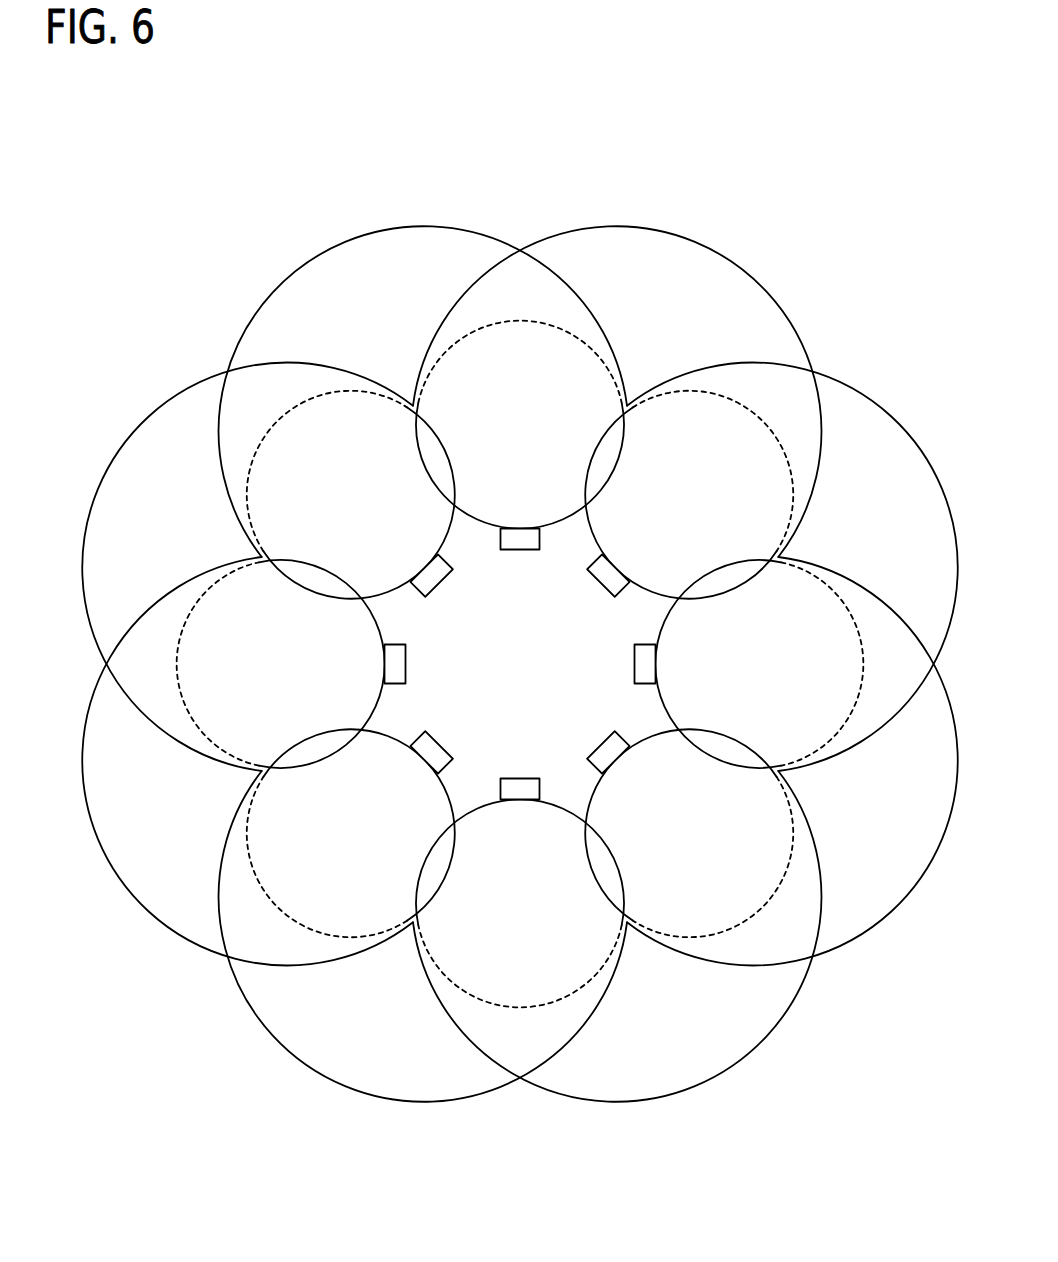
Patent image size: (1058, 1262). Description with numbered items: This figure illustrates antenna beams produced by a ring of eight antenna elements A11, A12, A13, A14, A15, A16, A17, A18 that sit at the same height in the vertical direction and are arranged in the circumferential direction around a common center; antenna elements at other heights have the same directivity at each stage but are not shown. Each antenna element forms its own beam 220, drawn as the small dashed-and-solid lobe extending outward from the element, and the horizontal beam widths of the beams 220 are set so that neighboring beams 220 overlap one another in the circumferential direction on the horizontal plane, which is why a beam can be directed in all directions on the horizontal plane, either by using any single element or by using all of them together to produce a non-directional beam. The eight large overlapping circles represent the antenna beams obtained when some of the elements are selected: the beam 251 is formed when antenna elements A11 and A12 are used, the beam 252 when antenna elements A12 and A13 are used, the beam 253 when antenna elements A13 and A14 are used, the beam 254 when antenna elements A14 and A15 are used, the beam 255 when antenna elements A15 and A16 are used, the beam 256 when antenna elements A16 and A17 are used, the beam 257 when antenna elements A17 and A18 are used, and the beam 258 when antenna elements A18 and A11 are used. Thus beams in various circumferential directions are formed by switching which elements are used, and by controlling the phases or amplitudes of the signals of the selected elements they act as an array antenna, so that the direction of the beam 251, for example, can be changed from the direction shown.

The beam 220 is at (462, 337).
The antenna beam 251 is at (703, 245).
The antenna beam 252 is at (893, 417).
The antenna beam 253 is at (894, 912).
The antenna beam 254 is at (698, 1084).
The antenna beam 255 is at (342, 1084).
The antenna beam 256 is at (146, 912).
The antenna beam 257 is at (147, 417).
The antenna beam 258 is at (337, 245).
The antenna element A11 is at (523, 550).
The antenna element A12 is at (603, 590).
The antenna element A13 is at (633, 668).
The antenna element A14 is at (597, 742).
The antenna element A15 is at (514, 778).
The antenna element A16 is at (440, 733).
The antenna element A17 is at (408, 660).
The antenna element A18 is at (448, 583).